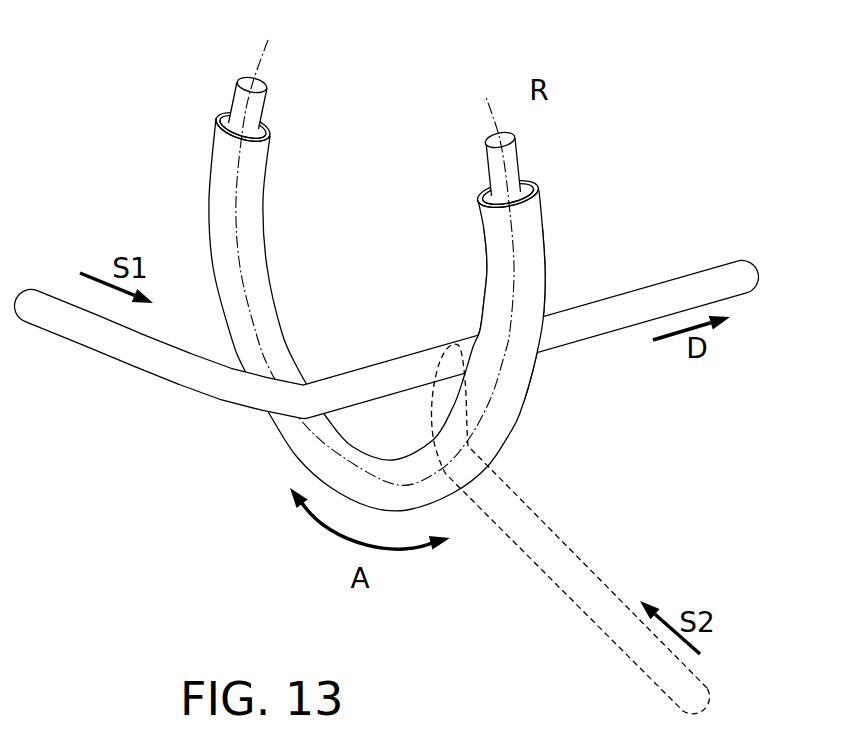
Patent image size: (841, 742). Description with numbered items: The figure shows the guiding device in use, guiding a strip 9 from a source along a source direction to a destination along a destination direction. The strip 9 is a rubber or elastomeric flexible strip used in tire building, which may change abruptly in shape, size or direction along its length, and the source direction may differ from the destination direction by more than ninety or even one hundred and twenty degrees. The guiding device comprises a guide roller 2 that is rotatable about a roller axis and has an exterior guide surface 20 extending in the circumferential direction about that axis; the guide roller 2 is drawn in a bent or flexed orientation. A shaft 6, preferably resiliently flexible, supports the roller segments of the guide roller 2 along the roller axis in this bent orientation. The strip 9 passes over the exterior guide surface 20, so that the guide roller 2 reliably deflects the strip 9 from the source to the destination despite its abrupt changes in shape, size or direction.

The guide roller 2 is at (344, 275).
The exterior guide surface 20 is at (220, 150).
The shaft 6 is at (510, 165).
The strip 9 is at (660, 293).